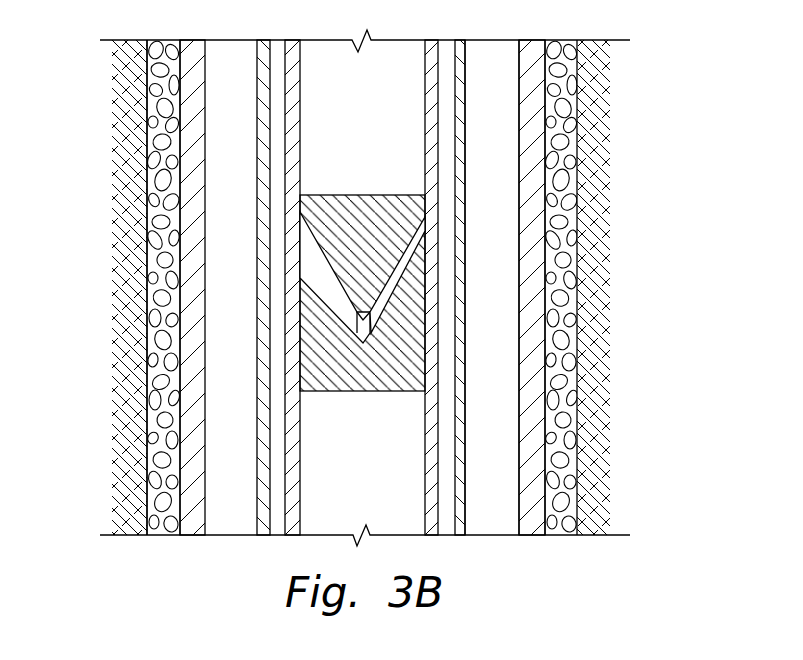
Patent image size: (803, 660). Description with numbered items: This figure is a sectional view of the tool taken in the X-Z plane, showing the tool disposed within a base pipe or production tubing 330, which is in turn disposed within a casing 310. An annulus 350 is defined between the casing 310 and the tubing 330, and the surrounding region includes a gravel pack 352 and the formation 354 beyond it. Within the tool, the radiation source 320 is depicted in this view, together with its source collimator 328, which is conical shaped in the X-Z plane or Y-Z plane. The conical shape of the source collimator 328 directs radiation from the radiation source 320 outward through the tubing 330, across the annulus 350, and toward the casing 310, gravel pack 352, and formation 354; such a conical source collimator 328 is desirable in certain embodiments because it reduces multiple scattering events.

The casing 310 is at (536, 437).
The radiation source 320 is at (371, 330).
The source collimator 328 is at (396, 292).
The base pipe or production tubing 330 is at (467, 188).
The annulus 350 is at (490, 377).
The gravel pack 352 is at (156, 245).
The formation 354 is at (150, 302).